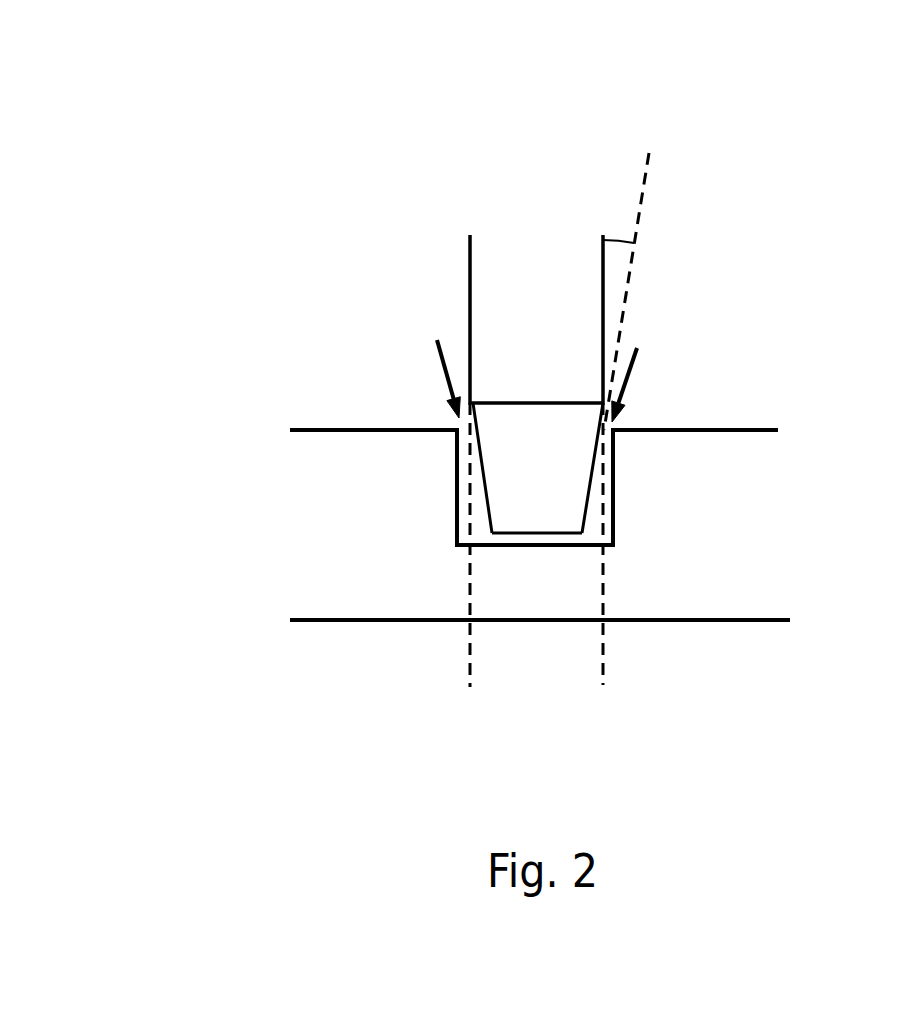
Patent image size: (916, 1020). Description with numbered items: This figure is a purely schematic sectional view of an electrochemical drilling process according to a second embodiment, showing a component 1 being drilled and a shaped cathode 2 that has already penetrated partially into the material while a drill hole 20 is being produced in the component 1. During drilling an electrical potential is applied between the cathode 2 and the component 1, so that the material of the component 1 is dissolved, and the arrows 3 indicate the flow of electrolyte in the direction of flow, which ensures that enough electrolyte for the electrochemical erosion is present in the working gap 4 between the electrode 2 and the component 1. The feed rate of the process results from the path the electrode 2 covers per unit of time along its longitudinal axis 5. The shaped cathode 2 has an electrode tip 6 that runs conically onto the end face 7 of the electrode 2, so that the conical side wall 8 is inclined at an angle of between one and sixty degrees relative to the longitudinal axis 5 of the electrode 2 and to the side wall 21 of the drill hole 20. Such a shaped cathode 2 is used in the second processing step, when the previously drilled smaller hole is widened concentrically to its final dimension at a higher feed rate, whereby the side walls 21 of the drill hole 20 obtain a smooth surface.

The component 1 is at (743, 462).
The shaped cathode 2 is at (533, 297).
The pressing direction arrows 3 is at (437, 353).
The working gap 4 is at (600, 532).
The longitudinal axis 5 is at (606, 660).
The electrode tip 6 is at (510, 500).
The end face 7 is at (538, 535).
The conical side wall 8 is at (483, 482).
The drill hole 20 is at (457, 545).
The side wall of the drill hole 21 is at (457, 501).